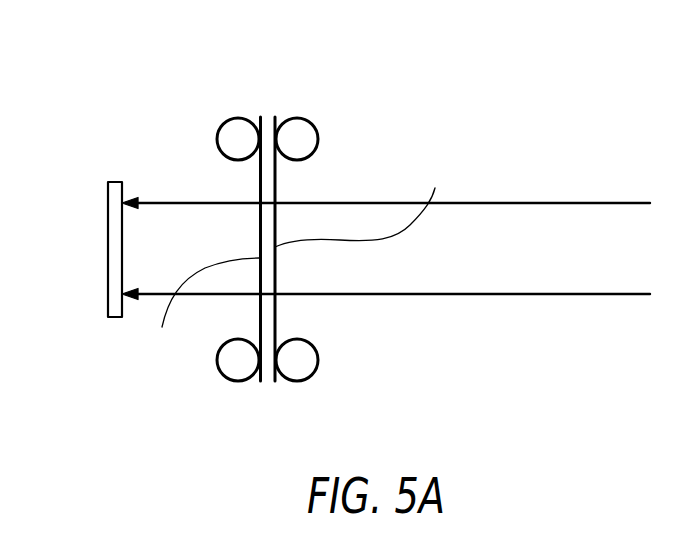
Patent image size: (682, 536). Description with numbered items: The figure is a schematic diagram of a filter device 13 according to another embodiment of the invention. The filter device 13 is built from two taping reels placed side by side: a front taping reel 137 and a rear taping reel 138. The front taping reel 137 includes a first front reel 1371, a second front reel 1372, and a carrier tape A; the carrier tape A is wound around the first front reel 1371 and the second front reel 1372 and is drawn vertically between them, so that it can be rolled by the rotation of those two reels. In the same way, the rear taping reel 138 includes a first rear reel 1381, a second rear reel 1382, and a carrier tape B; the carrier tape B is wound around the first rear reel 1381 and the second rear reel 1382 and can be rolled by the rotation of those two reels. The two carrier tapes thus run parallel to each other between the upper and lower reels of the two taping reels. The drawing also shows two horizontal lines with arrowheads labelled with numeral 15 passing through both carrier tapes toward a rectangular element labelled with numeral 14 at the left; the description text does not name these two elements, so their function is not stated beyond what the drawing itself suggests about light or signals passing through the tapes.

The filter device 13 is at (498, 85).
The light receiving element 14 is at (108, 245).
The light beam 15 is at (635, 203).
The front taping reel 137 is at (299, 178).
The rear taping reel 138 is at (231, 180).
The first front reel 1371 is at (295, 123).
The second front reel 1372 is at (305, 358).
The first rear reel 1381 is at (232, 125).
The second rear reel 1382 is at (238, 367).